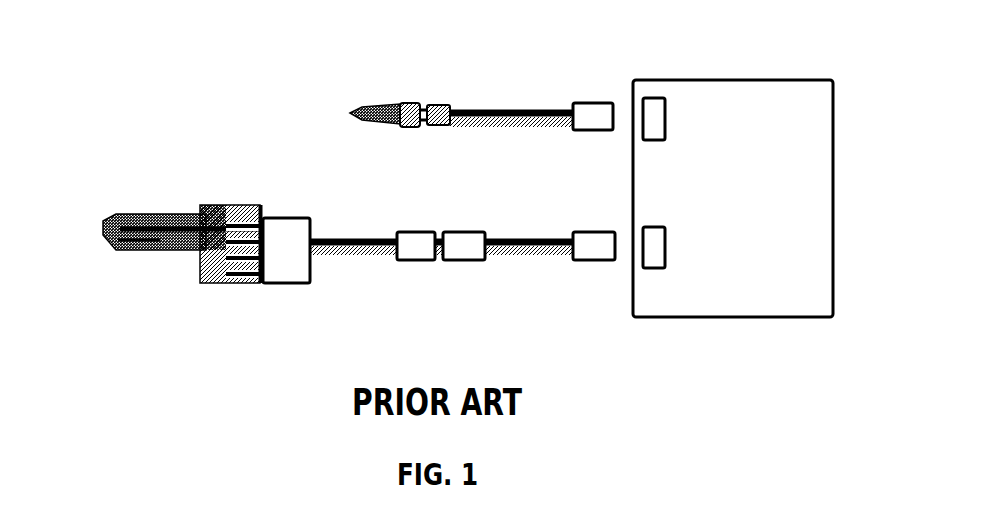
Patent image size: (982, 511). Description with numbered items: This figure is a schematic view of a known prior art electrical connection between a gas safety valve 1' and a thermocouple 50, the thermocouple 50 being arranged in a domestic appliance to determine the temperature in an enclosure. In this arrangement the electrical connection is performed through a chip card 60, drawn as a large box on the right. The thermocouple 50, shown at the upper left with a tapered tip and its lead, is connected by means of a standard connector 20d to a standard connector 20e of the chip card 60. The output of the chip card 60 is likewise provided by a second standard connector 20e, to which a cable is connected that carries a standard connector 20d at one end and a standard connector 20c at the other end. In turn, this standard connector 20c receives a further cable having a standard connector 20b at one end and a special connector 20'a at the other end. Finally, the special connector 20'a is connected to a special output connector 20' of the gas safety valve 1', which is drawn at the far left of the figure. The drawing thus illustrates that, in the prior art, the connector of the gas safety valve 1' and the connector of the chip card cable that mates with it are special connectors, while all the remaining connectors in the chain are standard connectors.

The gas safety valve 1' is at (182, 202).
The special output connector 20' is at (264, 218).
The special connector 20'a is at (286, 236).
The standard connector 20b is at (430, 230).
The standard connector 20c is at (450, 230).
The standard connector 20d is at (597, 101).
The standard connector 20e is at (610, 63).
The thermocouple 50 is at (388, 101).
The chip card 60 is at (648, 295).